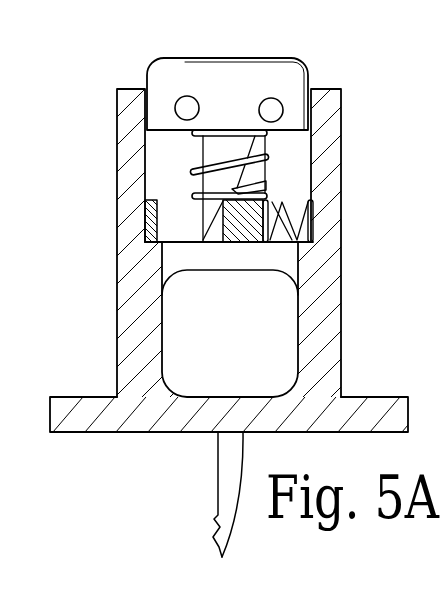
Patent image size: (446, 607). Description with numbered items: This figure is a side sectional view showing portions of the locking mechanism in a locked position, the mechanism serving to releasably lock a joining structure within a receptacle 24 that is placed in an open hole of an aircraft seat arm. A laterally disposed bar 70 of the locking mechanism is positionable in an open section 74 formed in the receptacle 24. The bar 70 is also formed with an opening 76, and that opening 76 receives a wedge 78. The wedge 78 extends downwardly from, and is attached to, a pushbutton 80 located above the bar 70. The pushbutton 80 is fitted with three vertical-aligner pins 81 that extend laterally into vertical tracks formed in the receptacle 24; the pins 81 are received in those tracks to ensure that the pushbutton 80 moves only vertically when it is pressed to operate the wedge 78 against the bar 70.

The receptacle 24 is at (108, 314).
The bar 70 is at (147, 232).
The open section 74 is at (175, 147).
The opening 76 is at (178, 215).
The wedge 78 is at (203, 155).
The pushbutton 80 is at (263, 58).
The vertical-aligner pins 81 is at (259, 110).